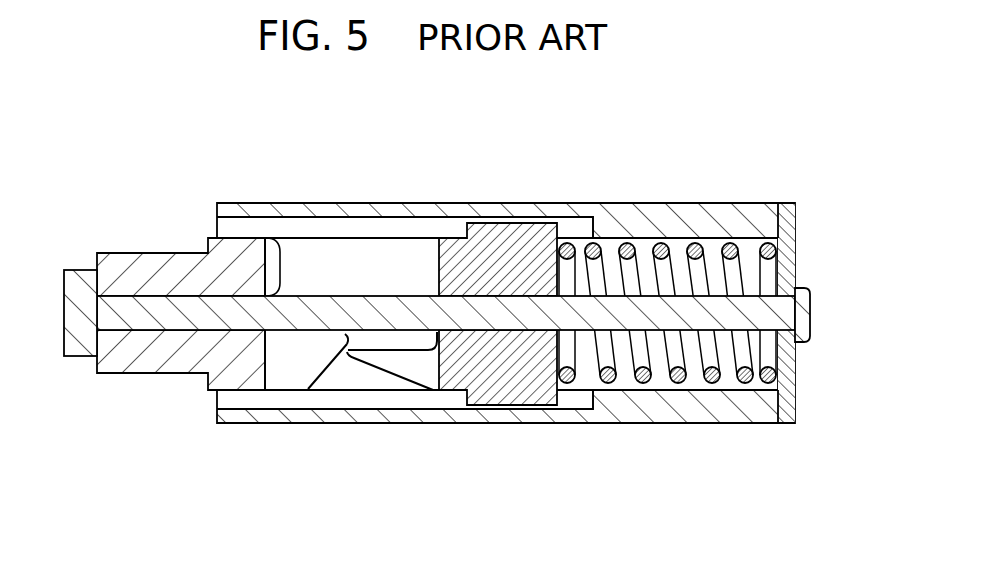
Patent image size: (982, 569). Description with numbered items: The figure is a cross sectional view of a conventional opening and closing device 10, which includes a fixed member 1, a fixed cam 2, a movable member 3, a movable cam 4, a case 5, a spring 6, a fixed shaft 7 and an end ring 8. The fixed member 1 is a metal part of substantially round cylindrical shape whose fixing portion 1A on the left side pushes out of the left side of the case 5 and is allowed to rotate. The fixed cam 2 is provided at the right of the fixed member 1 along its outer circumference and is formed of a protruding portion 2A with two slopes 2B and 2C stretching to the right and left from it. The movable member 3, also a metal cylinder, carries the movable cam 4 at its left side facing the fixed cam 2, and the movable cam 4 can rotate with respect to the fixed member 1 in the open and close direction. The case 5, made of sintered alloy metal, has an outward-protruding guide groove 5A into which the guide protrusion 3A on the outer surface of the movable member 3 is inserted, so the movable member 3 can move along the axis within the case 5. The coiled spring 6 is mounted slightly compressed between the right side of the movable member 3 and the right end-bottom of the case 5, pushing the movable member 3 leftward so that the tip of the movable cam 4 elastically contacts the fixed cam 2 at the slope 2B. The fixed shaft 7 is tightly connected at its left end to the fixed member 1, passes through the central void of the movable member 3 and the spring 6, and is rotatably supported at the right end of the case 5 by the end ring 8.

The fixed member 1 is at (183, 360).
The fixing portion 1A is at (157, 261).
The fixed cam 2 is at (301, 363).
The protruding portion 2A is at (346, 341).
The slope 2B is at (328, 370).
The slope 2C is at (321, 305).
The movable member 3 is at (502, 377).
The guide protrusion 3A is at (500, 233).
The movable cam 4 is at (380, 362).
The case 5 is at (666, 210).
The guide groove 5A is at (407, 229).
The spring 6 is at (652, 392).
The fixed shaft 7 is at (138, 316).
The end ring 8 is at (786, 412).
The opening and closing device 10 is at (797, 187).